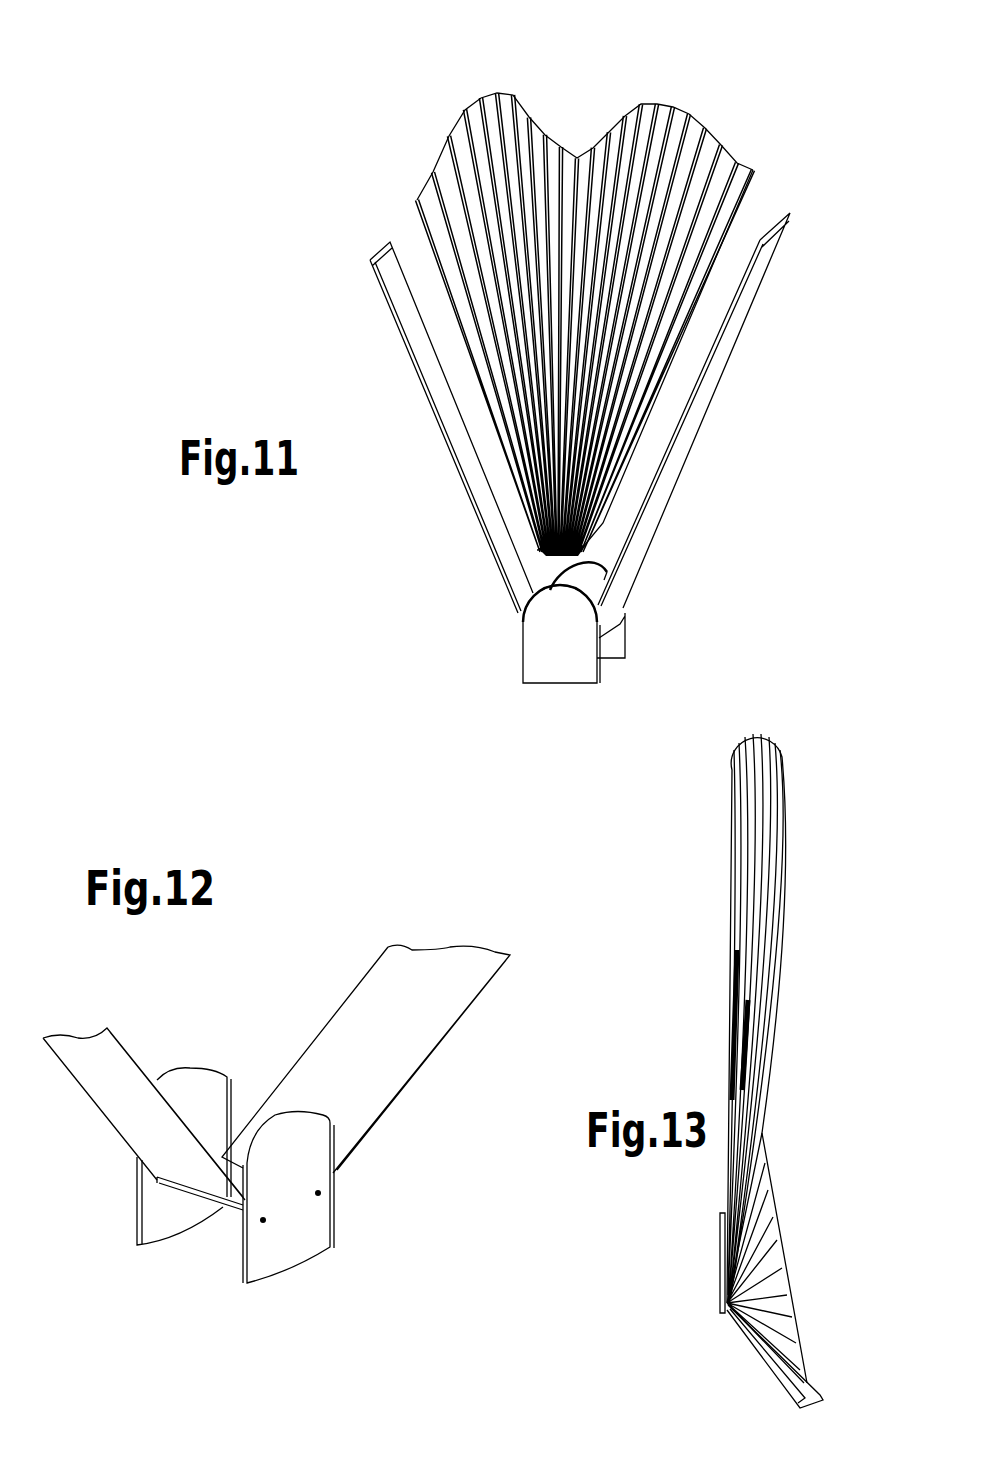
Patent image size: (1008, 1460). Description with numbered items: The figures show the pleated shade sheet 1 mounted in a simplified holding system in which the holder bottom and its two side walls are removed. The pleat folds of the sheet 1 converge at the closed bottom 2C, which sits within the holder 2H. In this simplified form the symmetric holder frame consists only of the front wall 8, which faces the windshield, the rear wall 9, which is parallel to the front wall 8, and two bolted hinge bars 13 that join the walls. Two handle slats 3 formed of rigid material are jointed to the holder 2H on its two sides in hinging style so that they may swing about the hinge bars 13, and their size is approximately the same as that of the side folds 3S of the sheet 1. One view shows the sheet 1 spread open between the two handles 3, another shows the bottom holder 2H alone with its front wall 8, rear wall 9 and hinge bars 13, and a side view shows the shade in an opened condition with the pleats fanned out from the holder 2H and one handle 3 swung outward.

In FIG. 11, the sheet 1 is at (497, 95).
In FIG. 13, the sheet 1 is at (788, 887).
In FIG. 11, the handle slat 3 is at (735, 341).
In FIG. 12, the handle slat 3 is at (412, 1034).
In FIG. 13, the handle slat 3 is at (813, 1392).
In FIG. 11, the side fold 3S is at (733, 207).
In FIG. 11, the closed bottom 2C is at (547, 553).
In FIG. 13, the holder 2H is at (712, 1317).
In FIG. 11, the front wall 8 is at (573, 673).
In FIG. 12, the front wall 8 is at (295, 1238).
In FIG. 11, the rear wall 9 is at (625, 630).
In FIG. 12, the rear wall 9 is at (190, 1090).
In FIG. 11, the bolted hinge bar 13 is at (580, 643).